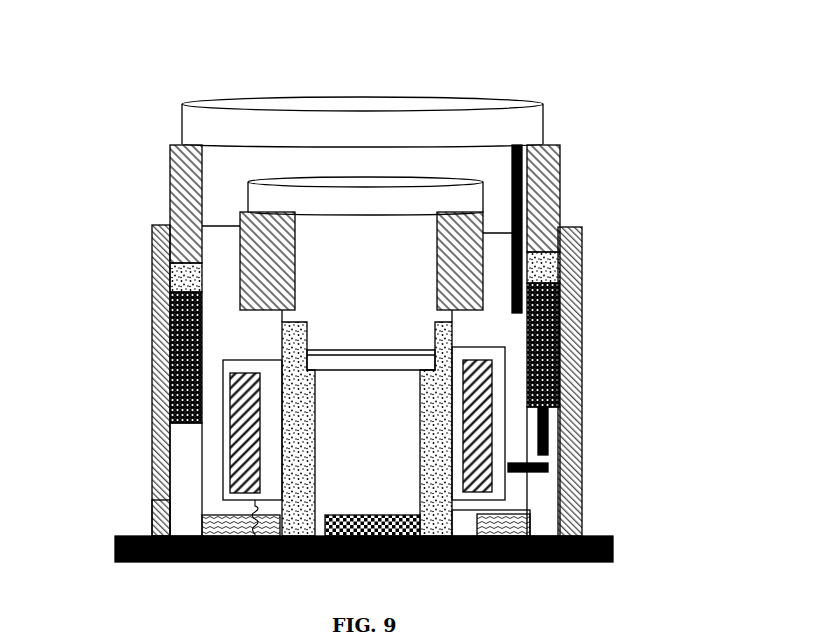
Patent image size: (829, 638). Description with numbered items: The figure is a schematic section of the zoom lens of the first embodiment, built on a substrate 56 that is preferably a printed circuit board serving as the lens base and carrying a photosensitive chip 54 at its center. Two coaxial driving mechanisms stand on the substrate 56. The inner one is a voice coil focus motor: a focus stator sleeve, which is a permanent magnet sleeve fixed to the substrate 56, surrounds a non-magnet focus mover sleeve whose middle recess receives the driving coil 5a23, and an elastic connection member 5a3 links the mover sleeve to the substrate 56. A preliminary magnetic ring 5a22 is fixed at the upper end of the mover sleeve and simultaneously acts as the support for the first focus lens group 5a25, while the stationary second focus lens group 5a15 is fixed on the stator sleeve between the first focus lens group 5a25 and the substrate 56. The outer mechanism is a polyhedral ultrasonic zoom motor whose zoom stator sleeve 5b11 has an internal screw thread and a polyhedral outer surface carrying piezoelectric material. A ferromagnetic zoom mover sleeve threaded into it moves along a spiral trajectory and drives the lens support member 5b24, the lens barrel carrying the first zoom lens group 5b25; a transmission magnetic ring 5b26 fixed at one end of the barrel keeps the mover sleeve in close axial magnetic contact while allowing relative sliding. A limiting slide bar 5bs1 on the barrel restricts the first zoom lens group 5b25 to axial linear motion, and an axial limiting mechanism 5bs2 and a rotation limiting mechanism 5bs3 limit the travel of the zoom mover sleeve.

The first zoom lens group 5b25 is at (292, 130).
The first focus lens group 5a25 is at (368, 198).
The second focus lens group 5a15 is at (363, 360).
The preliminary magnetic ring 5a22 is at (262, 247).
The transmission magnetic ring 5b26 is at (163, 272).
The zoom stator sleeve 5b11 is at (153, 523).
The lens support member 5b24 is at (540, 200).
The limiting slide bar 5bs1 is at (535, 272).
The rotation limiting mechanism 5bs3 is at (548, 437).
The axial limiting mechanism 5bs2 is at (553, 473).
The driving coil 5a23 is at (230, 418).
The photosensitive chip 54 is at (343, 518).
The elastic connection member 5a3 is at (502, 532).
The substrate 56 is at (387, 545).